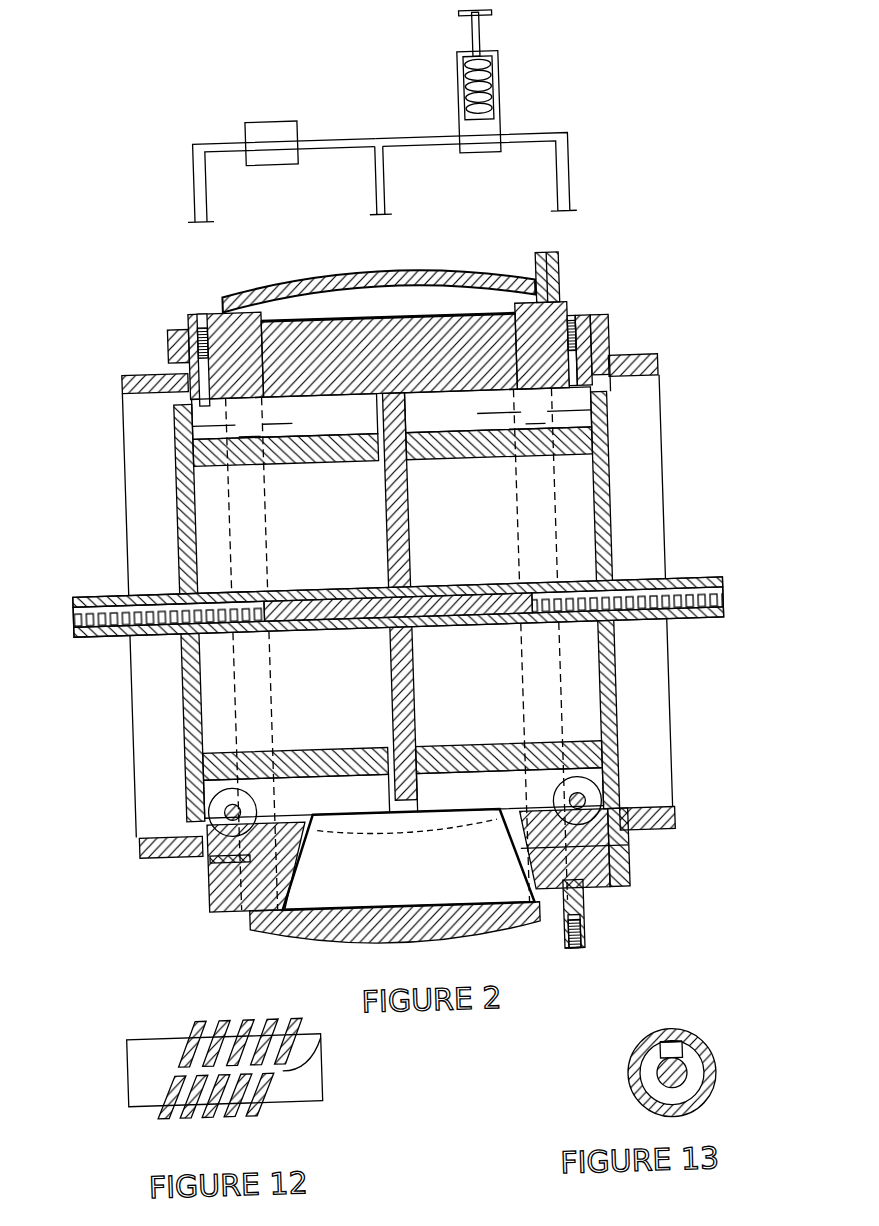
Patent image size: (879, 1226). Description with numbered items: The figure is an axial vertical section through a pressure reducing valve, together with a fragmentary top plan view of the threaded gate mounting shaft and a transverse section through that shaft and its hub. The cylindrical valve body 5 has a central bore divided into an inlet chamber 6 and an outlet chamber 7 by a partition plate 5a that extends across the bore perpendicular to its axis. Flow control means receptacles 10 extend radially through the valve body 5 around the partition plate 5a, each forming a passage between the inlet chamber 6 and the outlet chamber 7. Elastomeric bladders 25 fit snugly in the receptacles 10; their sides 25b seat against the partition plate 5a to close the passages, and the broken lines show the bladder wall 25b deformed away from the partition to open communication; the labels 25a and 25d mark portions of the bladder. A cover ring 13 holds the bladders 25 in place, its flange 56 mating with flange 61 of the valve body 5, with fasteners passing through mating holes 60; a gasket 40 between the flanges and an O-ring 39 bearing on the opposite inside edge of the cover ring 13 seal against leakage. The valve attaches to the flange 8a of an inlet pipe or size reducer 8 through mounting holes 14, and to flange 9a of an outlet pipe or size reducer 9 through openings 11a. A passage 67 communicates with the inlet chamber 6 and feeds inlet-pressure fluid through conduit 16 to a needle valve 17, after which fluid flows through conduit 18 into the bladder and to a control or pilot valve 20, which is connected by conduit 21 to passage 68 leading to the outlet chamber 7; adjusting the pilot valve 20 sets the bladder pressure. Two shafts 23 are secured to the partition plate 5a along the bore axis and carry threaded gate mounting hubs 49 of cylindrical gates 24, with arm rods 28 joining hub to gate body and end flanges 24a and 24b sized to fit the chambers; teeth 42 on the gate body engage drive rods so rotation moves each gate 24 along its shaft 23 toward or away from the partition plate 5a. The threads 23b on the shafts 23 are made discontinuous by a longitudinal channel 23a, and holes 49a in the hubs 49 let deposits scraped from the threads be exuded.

In FIG. 2, the valve body 5 is at (192, 310).
In FIG. 2, the partition plate 5a is at (410, 525).
In FIG. 2, the inlet chamber 6 is at (242, 424).
In FIG. 2, the outlet chamber 7 is at (534, 411).
In FIG. 2, the inlet pipe or size reducer 8 is at (129, 380).
In FIG. 2, the flange of inlet pipe 8a is at (176, 345).
In FIG. 2, the outlet pipe or size reducer 9 is at (668, 372).
In FIG. 2, the flange of outlet pipe 9a is at (617, 350).
In FIG. 2, the flow control means receptacle 10 is at (176, 355).
In FIG. 2, the openings 11a is at (621, 852).
In FIG. 2, the cover ring 13 is at (296, 292).
In FIG. 2, the mounting holes 14 is at (160, 850).
In FIG. 2, the conduit 16 is at (207, 178).
In FIG. 2, the needle valve 17 is at (270, 118).
In FIG. 2, the conduit 18 is at (397, 178).
In FIG. 2, the control or pilot valve 20 is at (515, 80).
In FIG. 2, the conduit 21 is at (580, 178).
In FIG. 2, the shaft 23 is at (140, 627).
In FIG. 12, the shaft 23 is at (130, 1058).
In FIG. 12, the channel 23a is at (307, 1031).
In FIG. 13, the channel 23a is at (668, 1052).
In FIG. 12, the threads 23b is at (148, 1112).
In FIG. 13, the threads 23b is at (648, 1058).
In FIG. 2, the cylindrical gate 24 is at (350, 462).
In FIG. 2, the end flange 24a is at (398, 602).
In FIG. 2, the end flange 24b is at (175, 400).
In FIG. 2, the elastomeric bladder 25 is at (330, 288).
In FIG. 2, the lens face 25a is at (312, 858).
In FIG. 2, the bladder side 25b is at (372, 828).
In FIG. 2, the lens cavity 25d is at (400, 314).
In FIG. 2, the arm rod 28 is at (613, 528).
In FIG. 2, the O-ring 39 is at (260, 912).
In FIG. 2, the gasket 40 is at (574, 900).
In FIG. 2, the teeth 42 is at (190, 408).
In FIG. 2, the gate mounting hub 49 is at (135, 587).
In FIG. 13, the gate mounting hub 49 is at (614, 1088).
In FIG. 13, the holes 49a is at (662, 1050).
In FIG. 2, the flange 56 is at (556, 935).
In FIG. 2, the mating holes 60 is at (546, 278).
In FIG. 2, the flange 61 is at (569, 262).
In FIG. 2, the passage 67 is at (210, 308).
In FIG. 2, the passage 68 is at (584, 312).